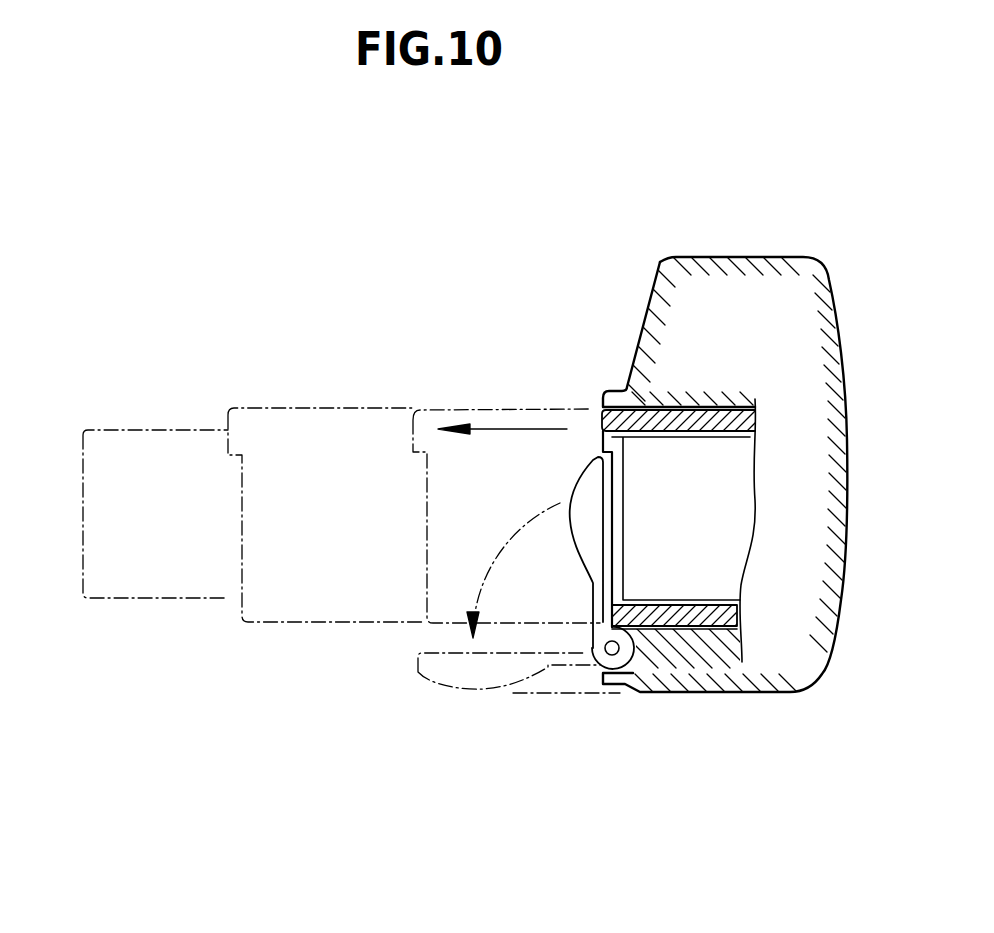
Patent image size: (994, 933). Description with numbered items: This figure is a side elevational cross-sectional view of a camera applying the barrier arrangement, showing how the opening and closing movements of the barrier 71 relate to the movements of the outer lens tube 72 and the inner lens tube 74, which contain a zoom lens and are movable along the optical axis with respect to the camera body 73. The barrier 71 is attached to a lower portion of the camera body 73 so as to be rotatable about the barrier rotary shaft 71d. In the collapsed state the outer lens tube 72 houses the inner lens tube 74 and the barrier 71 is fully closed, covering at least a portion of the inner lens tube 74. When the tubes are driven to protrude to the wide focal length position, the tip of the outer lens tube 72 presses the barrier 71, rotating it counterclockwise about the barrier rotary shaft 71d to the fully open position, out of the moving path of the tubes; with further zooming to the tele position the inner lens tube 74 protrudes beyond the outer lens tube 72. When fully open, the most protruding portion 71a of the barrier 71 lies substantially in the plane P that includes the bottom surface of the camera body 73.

The camera body 73 is at (698, 275).
The inner lens tube 74 is at (668, 457).
The outer lens tube 72 is at (613, 422).
The barrier 71 is at (585, 497).
The most protruding portion 71a is at (482, 690).
The barrier rotary shaft 71d is at (612, 648).
The plane including the bottom surface of the camera body P is at (567, 697).